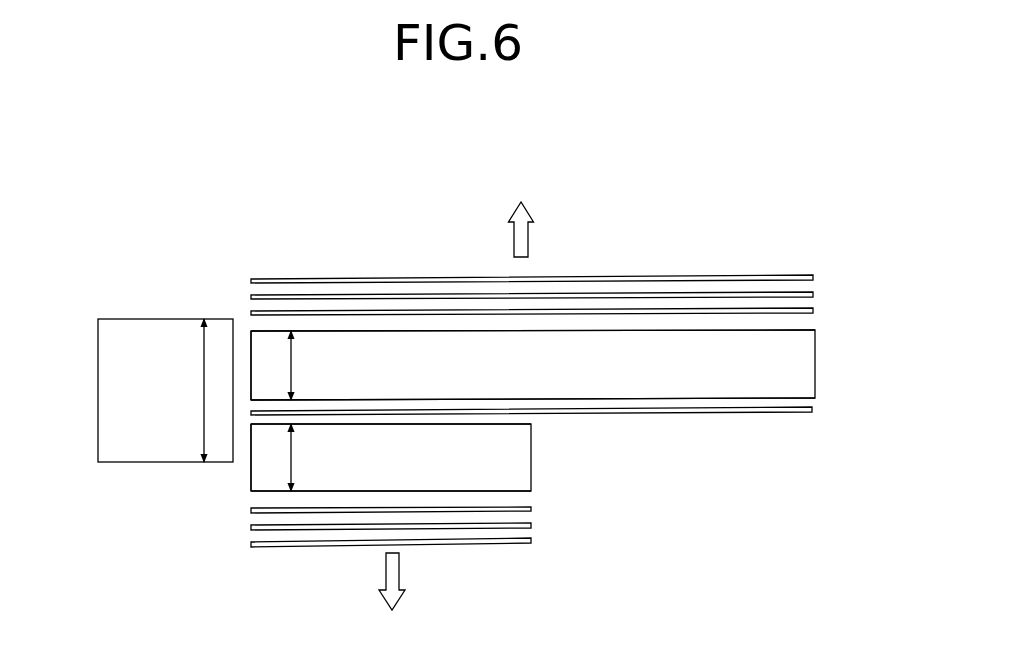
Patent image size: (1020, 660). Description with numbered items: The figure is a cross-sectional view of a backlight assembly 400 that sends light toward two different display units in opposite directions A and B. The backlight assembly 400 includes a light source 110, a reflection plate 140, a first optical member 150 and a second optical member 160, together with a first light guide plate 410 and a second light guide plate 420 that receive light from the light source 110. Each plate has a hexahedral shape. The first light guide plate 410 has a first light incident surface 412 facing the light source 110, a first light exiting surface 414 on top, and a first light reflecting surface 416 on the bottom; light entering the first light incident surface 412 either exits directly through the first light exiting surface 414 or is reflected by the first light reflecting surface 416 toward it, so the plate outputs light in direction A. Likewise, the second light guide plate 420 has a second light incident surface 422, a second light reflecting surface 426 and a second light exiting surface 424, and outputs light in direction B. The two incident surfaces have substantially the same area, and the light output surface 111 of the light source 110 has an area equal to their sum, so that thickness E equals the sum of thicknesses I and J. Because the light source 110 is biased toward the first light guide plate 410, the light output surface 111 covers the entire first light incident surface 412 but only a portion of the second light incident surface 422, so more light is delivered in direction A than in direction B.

The backlight assembly 400 is at (528, 121).
The light source 110 is at (135, 440).
The light output surface 111 is at (233, 380).
The first optical member 150 is at (825, 275).
The first light guide plate 410 is at (822, 345).
The first light incident surface 412 is at (251, 338).
The first light exiting surface 414 is at (729, 331).
The first light reflecting surface 416 is at (729, 398).
The reflection plate 140 is at (812, 409).
The second light guide plate 420 is at (538, 470).
The second light incident surface 422 is at (251, 489).
The second light exiting surface 424 is at (508, 490).
The second light reflecting surface 426 is at (508, 425).
The second optical member 160 is at (537, 507).